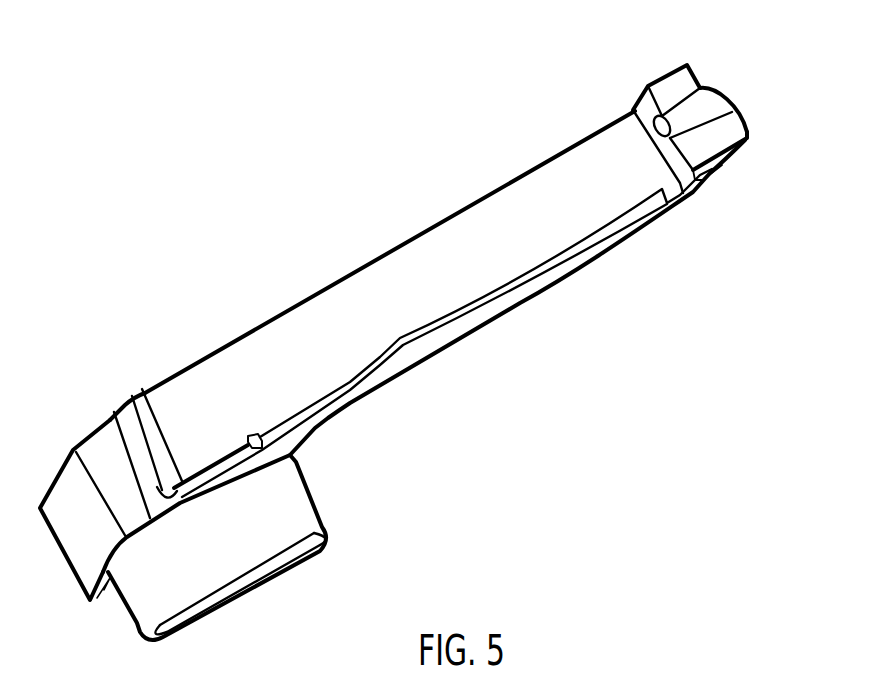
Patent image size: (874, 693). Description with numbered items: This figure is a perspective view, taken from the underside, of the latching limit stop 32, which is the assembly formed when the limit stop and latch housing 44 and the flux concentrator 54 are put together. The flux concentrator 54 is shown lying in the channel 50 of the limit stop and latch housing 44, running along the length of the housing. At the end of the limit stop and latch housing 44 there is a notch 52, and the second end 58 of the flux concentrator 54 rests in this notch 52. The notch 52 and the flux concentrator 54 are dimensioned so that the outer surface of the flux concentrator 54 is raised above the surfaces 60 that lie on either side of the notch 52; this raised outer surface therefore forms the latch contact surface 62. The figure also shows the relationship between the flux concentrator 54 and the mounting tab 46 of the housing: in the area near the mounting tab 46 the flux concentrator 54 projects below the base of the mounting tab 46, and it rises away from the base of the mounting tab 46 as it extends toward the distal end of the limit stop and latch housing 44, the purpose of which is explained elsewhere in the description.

The latching limit stop 32 is at (690, 427).
The limit stop and latch housing 44 is at (298, 303).
The mounting tab 46 is at (257, 532).
The channel 50 is at (165, 503).
The notch 52 is at (664, 140).
The flux concentrator 54 is at (307, 433).
The second end 58 is at (650, 120).
The surfaces 60 is at (677, 80).
The latch contact surface 62 is at (702, 102).